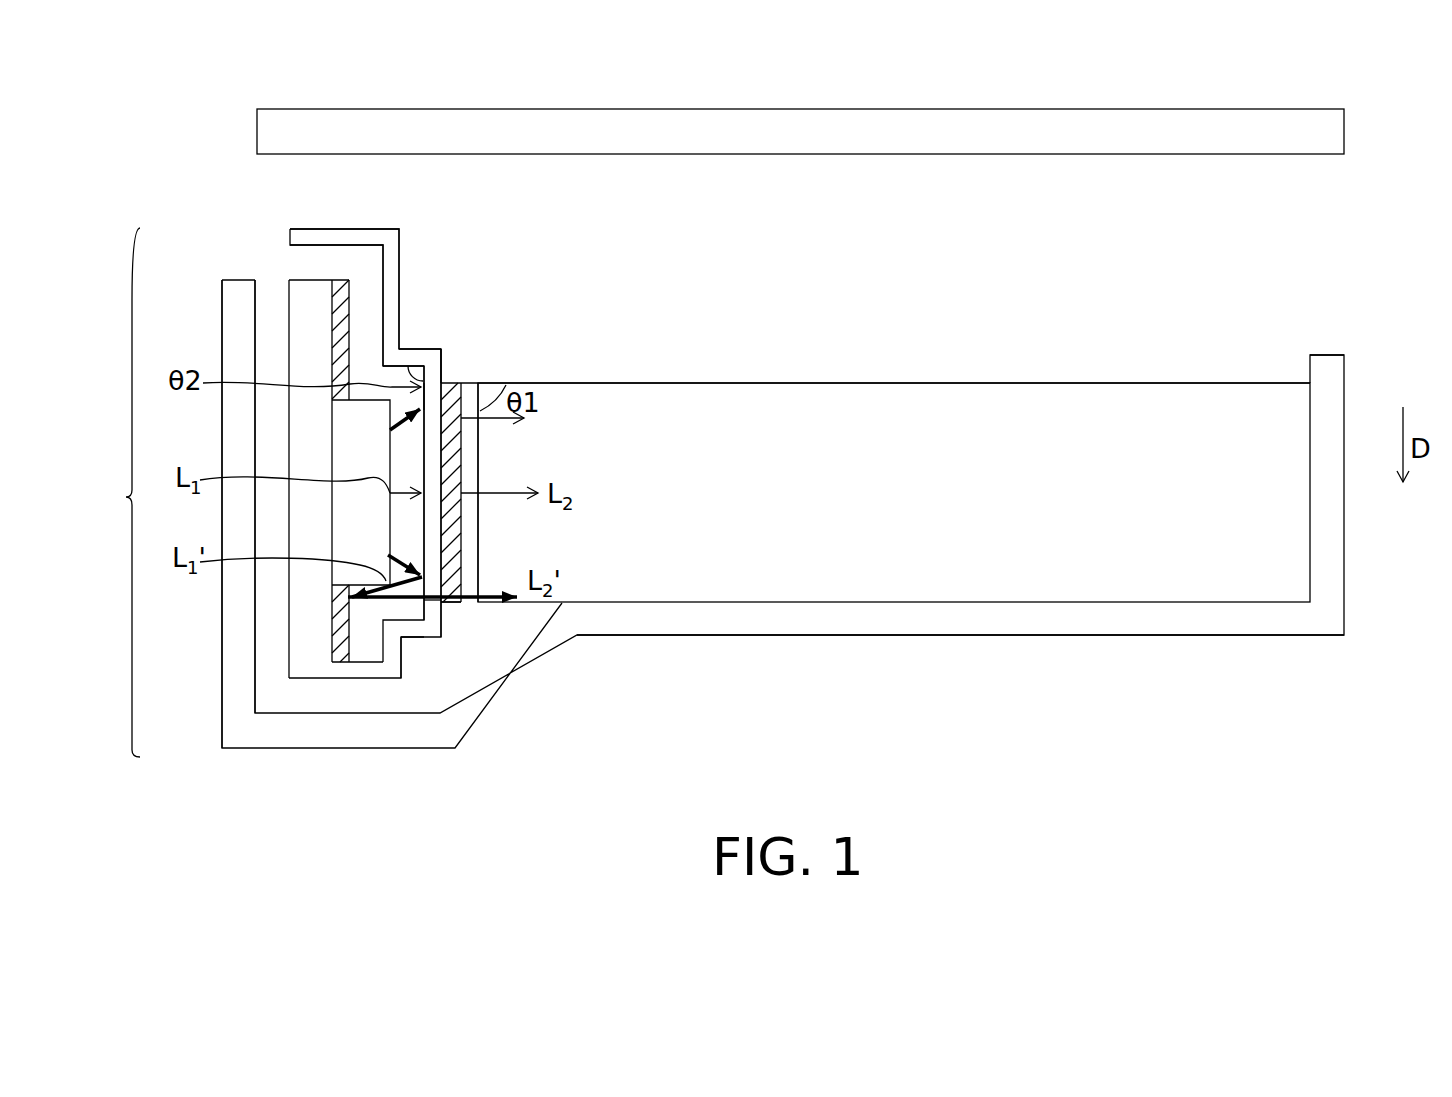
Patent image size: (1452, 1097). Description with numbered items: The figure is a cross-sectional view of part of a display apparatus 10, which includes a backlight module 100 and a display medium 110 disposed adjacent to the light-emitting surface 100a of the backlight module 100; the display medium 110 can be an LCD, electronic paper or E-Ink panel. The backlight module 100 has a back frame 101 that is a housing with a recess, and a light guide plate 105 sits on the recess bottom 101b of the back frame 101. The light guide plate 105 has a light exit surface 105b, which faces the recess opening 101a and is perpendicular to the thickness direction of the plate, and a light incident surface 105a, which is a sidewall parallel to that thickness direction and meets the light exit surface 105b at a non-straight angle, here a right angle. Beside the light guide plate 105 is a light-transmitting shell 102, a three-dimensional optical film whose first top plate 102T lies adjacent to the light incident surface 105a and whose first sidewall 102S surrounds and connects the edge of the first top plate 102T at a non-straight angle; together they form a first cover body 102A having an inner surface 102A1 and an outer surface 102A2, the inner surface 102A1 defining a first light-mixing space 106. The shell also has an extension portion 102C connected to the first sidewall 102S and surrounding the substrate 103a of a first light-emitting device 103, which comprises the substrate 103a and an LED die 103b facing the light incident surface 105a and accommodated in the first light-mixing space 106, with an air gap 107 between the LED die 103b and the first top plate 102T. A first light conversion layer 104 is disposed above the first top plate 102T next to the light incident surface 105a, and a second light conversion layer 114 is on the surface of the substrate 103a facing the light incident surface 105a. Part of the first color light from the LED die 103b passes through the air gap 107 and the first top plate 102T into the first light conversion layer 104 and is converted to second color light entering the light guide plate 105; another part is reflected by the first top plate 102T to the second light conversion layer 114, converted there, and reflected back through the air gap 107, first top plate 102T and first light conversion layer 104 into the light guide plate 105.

The display apparatus 10 is at (190, 50).
The backlight module 100 is at (109, 492).
The light-emitting surface 100a is at (1162, 226).
The back frame 101 is at (1330, 556).
The recess opening 101a is at (1313, 352).
The recess bottom 101b is at (1144, 600).
The light-transmitting shell 102 is at (308, 672).
The first cover body 102A is at (916, 485).
The inner surface 102A1 is at (446, 363).
The outer surface 102A2 is at (386, 396).
The extension portion 102C is at (358, 240).
The first sidewall 102S is at (412, 356).
The first top plate 102T is at (430, 378).
The first light-emitting device 103 is at (785, 544).
The substrate 103a is at (305, 328).
The LED die 103b is at (345, 431).
The first light conversion layer 104 is at (457, 602).
The light guide plate 105 is at (916, 507).
The light incident surface 105a is at (474, 575).
The light exit surface 105b is at (1130, 380).
The first light-mixing space 106 is at (408, 608).
The air gap 107 is at (433, 605).
The display medium 110 is at (1327, 131).
The second light conversion layer 114 is at (340, 656).